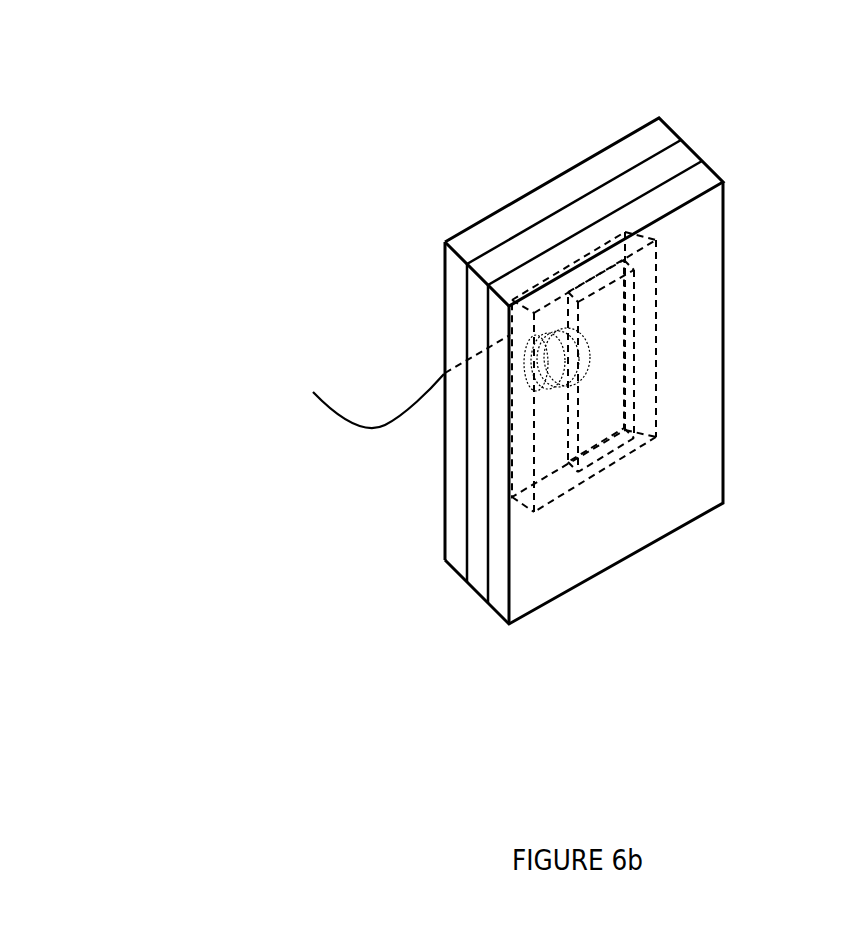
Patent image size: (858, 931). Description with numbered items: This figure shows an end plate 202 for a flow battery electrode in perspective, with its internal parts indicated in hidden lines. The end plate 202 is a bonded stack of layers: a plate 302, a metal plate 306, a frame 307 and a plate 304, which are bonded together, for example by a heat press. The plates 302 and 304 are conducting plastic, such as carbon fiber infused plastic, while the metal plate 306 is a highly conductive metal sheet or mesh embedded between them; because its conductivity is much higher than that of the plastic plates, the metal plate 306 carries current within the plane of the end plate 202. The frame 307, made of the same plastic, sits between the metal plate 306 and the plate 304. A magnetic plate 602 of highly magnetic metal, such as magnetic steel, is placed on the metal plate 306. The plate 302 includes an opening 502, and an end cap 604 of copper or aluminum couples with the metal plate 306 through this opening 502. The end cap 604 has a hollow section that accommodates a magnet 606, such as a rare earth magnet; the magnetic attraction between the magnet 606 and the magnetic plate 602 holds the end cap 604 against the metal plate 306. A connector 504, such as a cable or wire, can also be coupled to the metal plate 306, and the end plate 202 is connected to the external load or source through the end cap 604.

The end plate 202 is at (140, 31).
The plate 302 is at (674, 126).
The frame 307 is at (467, 277).
The plate 304 is at (508, 623).
The metal plate 306 is at (657, 437).
The opening 502 is at (542, 318).
The connector 504 is at (368, 432).
The magnetic plate 602 is at (592, 308).
The end cap 604 is at (590, 348).
The magnet 606 is at (550, 385).